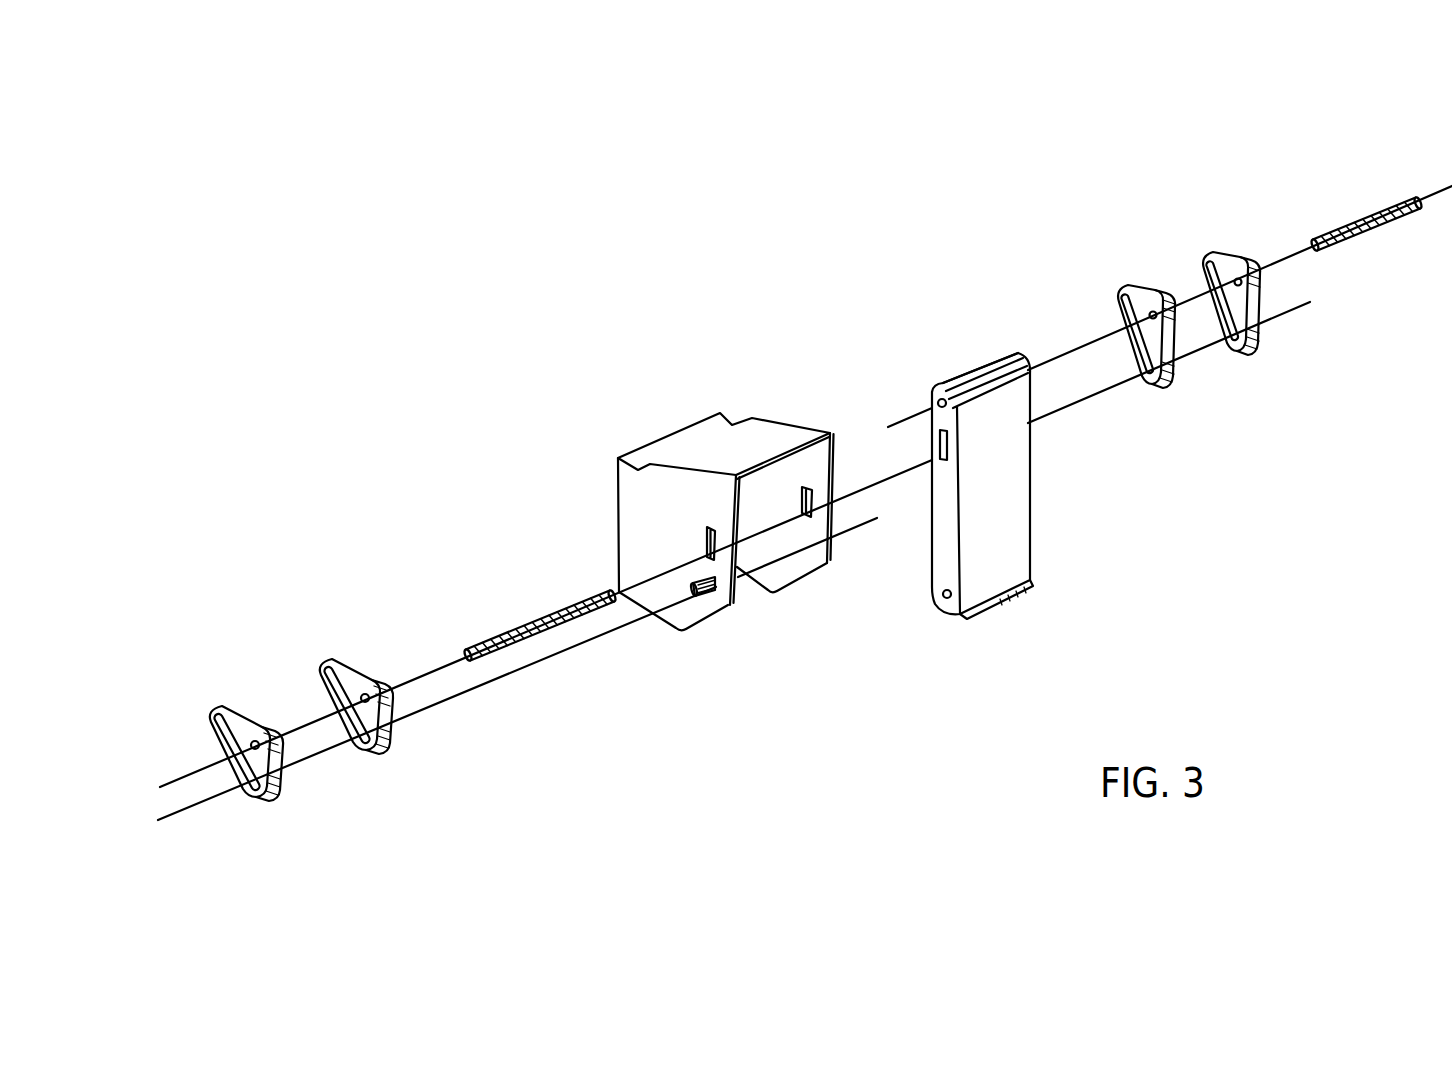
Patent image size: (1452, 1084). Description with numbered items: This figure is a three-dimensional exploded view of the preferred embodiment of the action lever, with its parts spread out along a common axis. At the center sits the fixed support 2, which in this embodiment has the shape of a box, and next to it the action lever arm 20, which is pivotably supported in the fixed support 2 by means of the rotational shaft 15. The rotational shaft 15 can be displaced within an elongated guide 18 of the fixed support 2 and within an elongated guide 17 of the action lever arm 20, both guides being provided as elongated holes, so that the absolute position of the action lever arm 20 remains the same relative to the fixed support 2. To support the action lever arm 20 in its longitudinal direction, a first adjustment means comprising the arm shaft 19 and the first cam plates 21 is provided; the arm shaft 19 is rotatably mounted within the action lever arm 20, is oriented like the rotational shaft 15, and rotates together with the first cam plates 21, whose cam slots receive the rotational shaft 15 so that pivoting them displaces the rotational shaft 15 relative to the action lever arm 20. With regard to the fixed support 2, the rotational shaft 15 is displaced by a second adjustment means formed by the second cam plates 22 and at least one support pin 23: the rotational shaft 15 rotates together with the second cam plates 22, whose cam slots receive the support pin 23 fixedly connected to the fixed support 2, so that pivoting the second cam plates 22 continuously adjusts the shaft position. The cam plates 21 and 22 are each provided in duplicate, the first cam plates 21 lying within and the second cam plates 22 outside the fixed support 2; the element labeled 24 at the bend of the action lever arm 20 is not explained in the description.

The fixed support 2 is at (702, 452).
The rotational shaft 15 is at (535, 617).
The elongated guide of the arm 17 is at (937, 447).
The elongated guide of the fixed support 18 is at (703, 545).
The arm shaft 19 is at (1354, 222).
The action lever arm 20 is at (1027, 545).
The first cam plates 21 is at (1147, 292).
The second cam plates 22 is at (247, 707).
The support pin 23 is at (695, 596).
The bend 24 is at (937, 383).